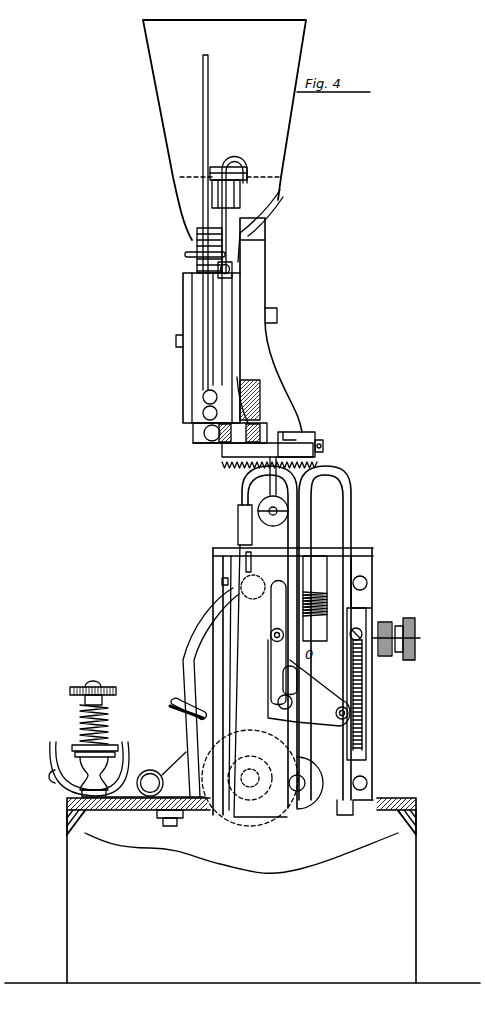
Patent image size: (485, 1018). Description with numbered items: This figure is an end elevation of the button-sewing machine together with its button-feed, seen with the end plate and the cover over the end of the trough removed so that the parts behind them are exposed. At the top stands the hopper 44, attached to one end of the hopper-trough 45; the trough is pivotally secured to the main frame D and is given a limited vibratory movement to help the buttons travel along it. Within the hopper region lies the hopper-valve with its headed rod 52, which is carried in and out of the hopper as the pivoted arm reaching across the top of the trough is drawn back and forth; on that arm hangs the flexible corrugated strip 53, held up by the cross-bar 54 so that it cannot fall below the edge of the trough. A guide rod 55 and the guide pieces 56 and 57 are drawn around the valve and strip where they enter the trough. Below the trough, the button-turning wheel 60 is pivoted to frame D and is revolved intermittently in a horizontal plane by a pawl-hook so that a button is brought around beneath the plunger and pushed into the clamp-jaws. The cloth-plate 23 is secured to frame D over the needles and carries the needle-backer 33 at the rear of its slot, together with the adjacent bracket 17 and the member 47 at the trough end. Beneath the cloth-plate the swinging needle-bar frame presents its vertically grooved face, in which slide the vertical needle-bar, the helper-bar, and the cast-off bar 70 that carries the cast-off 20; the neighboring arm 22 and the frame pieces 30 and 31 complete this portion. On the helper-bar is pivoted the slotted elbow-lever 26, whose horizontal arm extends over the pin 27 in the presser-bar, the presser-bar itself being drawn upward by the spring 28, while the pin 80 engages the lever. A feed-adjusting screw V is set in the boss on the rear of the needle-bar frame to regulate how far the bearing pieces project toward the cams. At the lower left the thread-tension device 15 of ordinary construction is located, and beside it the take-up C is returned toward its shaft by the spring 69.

The hopper 44 is at (224, 141).
The rod 55 is at (194, 222).
The rod 52 is at (248, 172).
The guide block 56 is at (241, 203).
The flexible corrugated strip 53 is at (204, 229).
The cross-bar 54 is at (186, 254).
The knob 57 is at (233, 270).
The frame D is at (240, 297).
The button-turning wheel 60 is at (194, 436).
The hopper-trough 45 is at (191, 393).
The bracket 47 is at (196, 443).
The needle-backer 33 is at (222, 455).
The bracket 17 is at (286, 447).
The cloth-plate 23 is at (325, 450).
The cast-off 20 is at (243, 488).
The arm 22 is at (338, 633).
The frame 30 is at (222, 585).
The pawl 31 is at (215, 562).
The spring 28 is at (350, 706).
The feed-adjusting screw V is at (402, 643).
The slotted elbow-lever 26 is at (309, 683).
The pin 27 is at (339, 722).
The pin 80 is at (273, 631).
The take-up C is at (188, 703).
The cast-off bar 70 is at (236, 806).
The spring unit 15 is at (82, 728).
The spring 69 is at (156, 774).